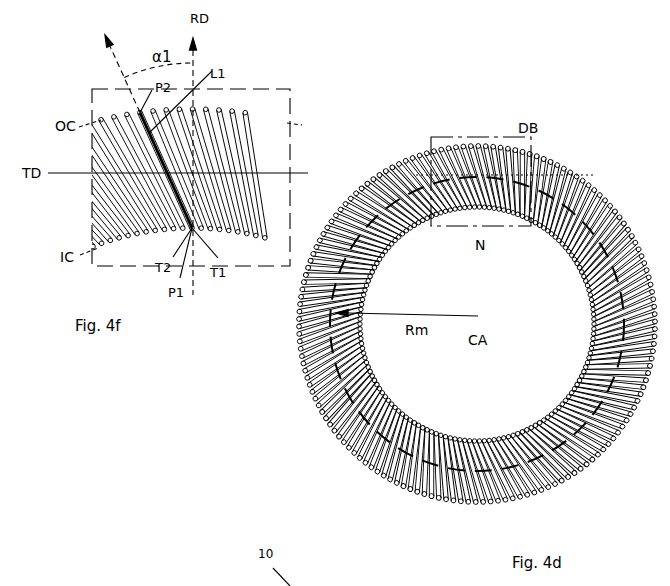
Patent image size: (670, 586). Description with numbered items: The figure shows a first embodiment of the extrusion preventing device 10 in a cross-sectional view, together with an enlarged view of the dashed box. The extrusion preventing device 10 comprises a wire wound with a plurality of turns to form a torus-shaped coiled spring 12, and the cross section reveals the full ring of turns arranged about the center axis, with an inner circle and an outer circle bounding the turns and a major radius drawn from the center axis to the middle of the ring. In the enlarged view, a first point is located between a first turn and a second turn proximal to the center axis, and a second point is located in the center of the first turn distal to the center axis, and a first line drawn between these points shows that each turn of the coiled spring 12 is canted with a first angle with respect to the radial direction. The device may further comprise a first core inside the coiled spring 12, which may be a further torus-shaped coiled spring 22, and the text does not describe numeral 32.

In FIG. 4D, the extrusion preventing device 10 is at (461, 319).
In FIG. 4F, the torus-shaped coiled spring 12 is at (167, 143).
In FIG. 4D, the torus-shaped coiled spring 12 is at (616, 156).
In FIG. 4F, the further torus-shaped coiled spring 22 is at (167, 195).
In FIG. 4F, the inner circumference layer 32 is at (200, 217).